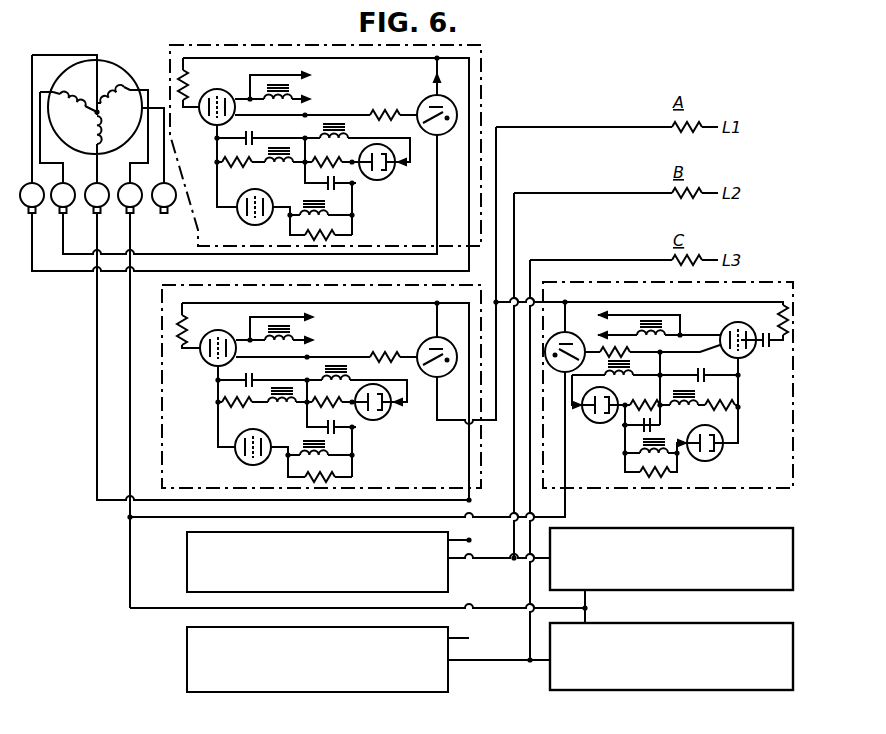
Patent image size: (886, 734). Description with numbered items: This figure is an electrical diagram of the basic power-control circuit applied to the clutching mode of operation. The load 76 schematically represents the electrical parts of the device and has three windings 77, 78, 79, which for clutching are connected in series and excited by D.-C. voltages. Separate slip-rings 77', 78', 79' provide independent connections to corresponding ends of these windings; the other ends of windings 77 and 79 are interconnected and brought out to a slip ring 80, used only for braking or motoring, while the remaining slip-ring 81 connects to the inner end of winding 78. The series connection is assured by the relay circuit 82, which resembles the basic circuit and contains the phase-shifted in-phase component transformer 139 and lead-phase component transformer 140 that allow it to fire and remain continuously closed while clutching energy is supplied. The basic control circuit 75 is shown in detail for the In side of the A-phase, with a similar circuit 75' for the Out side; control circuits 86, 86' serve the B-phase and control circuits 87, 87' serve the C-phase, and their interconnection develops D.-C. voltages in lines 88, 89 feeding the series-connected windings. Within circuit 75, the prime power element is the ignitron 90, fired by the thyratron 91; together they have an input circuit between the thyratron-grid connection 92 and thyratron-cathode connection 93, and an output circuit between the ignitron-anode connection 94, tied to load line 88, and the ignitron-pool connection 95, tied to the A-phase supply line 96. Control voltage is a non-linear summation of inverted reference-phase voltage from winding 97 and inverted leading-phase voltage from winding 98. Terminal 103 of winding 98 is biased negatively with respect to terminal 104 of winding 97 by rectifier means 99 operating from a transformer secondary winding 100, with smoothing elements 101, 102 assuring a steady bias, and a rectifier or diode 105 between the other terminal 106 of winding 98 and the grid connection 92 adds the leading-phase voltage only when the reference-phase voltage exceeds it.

The load 76 is at (129, 66).
The winding 77 is at (75, 91).
The winding 78 is at (118, 86).
The winding 79 is at (83, 146).
The slip-ring 81 is at (36, 212).
The slip-ring 77' is at (69, 213).
The slip-ring 79' is at (103, 213).
The slip-ring 78' is at (136, 213).
The slip ring 80 is at (170, 212).
The relay circuit 82 is at (485, 89).
The in-phase component transformer 139 is at (294, 166).
The lead-phase component transformer 140 is at (352, 222).
The A-phase supply line 96 is at (705, 120).
The basic control circuit 75 is at (264, 386).
The control circuit 75' is at (668, 370).
The load line 88 is at (97, 433).
The load line 89 is at (130, 462).
The thyratron 91 is at (222, 331).
The thyratron-grid connection 92 is at (212, 372).
The thyratron-cathode connection 93 is at (252, 356).
The ignitron-anode connection 94 is at (437, 319).
The ignitron 90 is at (420, 346).
The ignitron-pool connection 95 is at (446, 422).
The winding 97 is at (283, 399).
The terminal 104 is at (284, 408).
The smoothing element 101 is at (336, 398).
The transformer secondary winding 100 is at (355, 378).
The rectifier means 99 is at (388, 416).
The smoothing element 102 is at (320, 430).
The rectifier or diode 105 is at (240, 462).
The terminal 106 is at (287, 460).
The winding 98 is at (312, 459).
The terminal 103 is at (354, 455).
The control circuit 86 is at (299, 562).
The control circuit 87 is at (299, 659).
The control circuit 86' is at (671, 544).
The control circuit 87' is at (671, 642).